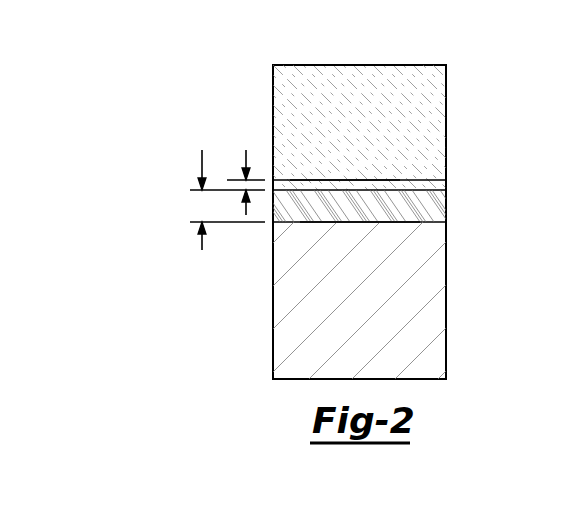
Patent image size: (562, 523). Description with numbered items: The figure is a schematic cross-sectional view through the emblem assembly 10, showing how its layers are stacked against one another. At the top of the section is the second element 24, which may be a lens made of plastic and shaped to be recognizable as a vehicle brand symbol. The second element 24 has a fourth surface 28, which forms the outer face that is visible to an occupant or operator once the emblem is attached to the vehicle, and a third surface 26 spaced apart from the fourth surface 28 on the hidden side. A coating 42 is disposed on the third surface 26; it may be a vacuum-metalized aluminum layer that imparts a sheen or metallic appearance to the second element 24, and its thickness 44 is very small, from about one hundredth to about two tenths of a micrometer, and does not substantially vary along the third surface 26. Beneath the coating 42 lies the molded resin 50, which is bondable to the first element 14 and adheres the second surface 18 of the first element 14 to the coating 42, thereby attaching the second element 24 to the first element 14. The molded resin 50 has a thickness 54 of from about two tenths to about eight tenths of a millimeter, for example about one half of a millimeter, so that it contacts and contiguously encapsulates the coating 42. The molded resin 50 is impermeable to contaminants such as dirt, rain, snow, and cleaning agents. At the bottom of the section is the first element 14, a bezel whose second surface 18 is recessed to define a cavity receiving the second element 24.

The emblem assembly 10 is at (236, 59).
The first element 14 is at (446, 315).
The second surface 18 is at (340, 222).
The second element 24 is at (446, 110).
The third surface 26 is at (318, 182).
The fourth surface 28 is at (343, 66).
The coating 42 is at (446, 185).
The thickness 44 is at (246, 158).
The molded resin 50 is at (446, 200).
The thickness 54 is at (202, 250).